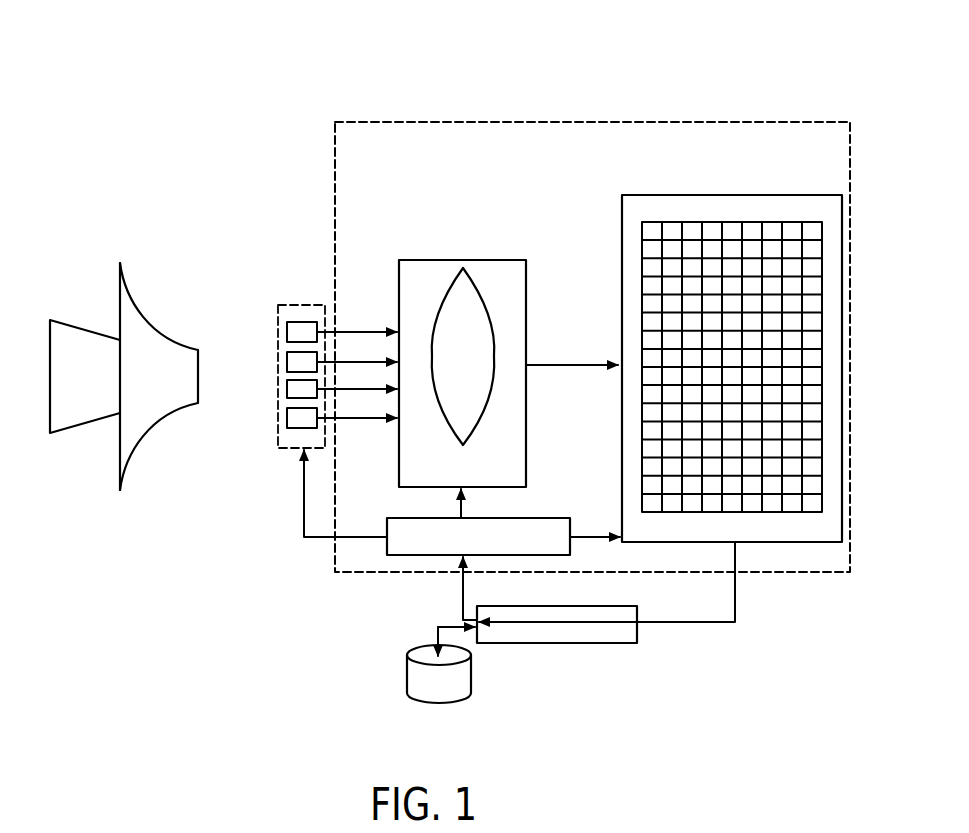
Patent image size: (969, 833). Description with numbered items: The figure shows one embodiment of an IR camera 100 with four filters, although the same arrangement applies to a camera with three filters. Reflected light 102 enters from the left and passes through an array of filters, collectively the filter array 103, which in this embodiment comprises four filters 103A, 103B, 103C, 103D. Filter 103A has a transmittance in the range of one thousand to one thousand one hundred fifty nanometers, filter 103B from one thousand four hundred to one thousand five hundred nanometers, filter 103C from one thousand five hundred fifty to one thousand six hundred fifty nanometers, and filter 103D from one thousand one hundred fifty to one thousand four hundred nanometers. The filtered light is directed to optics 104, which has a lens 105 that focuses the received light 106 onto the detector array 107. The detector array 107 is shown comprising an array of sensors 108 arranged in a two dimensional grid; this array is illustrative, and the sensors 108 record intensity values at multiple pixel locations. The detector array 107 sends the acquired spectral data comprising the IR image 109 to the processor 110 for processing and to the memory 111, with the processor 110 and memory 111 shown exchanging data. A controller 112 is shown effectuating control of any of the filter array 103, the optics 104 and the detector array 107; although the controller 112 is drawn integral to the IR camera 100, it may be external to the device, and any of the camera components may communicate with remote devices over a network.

The IR camera 100 is at (633, 76).
The reflected light 102 is at (98, 332).
The filter array 103 is at (301, 303).
The filter 103A is at (287, 332).
The filter 103B is at (287, 362).
The filter 103C is at (287, 390).
The filter 103D is at (287, 418).
The optics 104 is at (469, 260).
The lens 105 is at (439, 317).
The received light 106 is at (563, 365).
The detector array 107 is at (651, 195).
The sensors 108 is at (701, 222).
The IR image 109 is at (735, 595).
The processor 110 is at (640, 630).
The memory 111 is at (471, 672).
The controller 112 is at (407, 556).